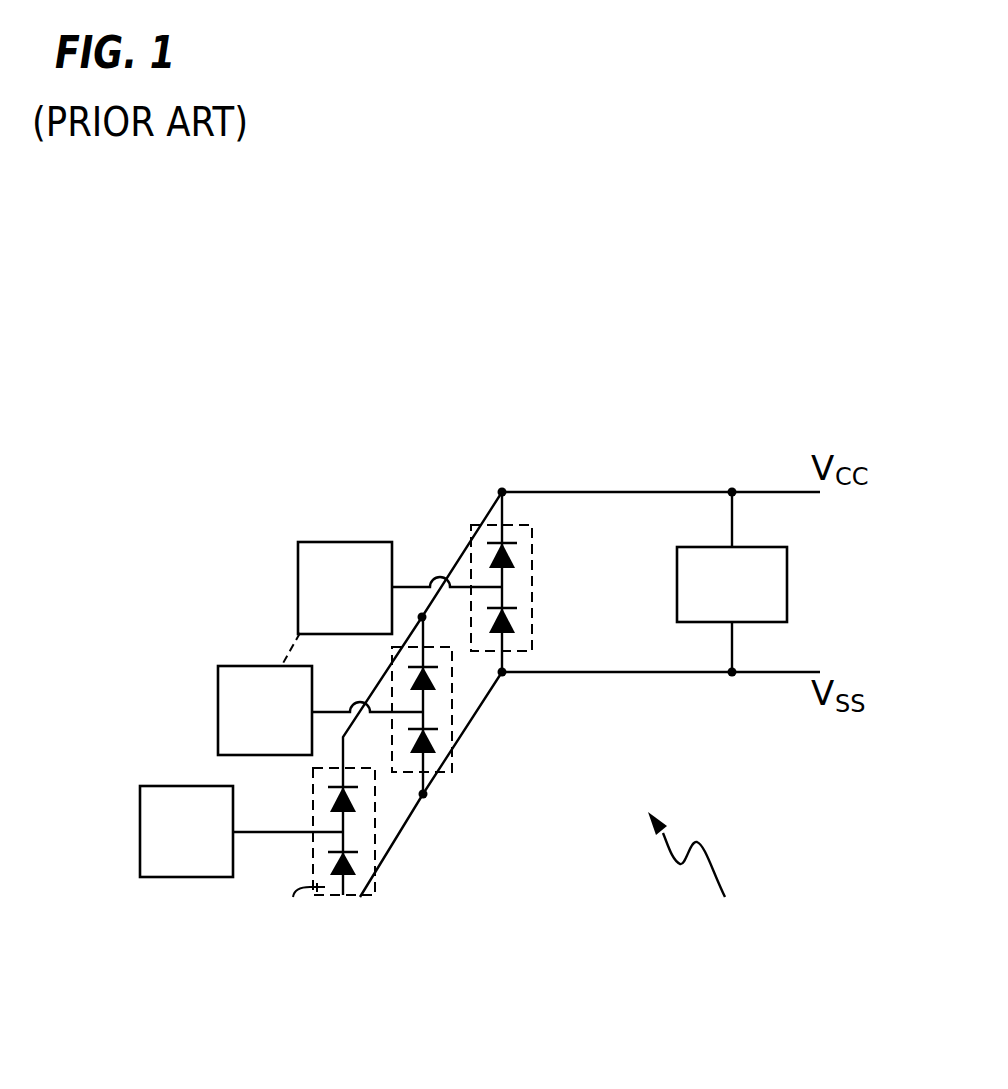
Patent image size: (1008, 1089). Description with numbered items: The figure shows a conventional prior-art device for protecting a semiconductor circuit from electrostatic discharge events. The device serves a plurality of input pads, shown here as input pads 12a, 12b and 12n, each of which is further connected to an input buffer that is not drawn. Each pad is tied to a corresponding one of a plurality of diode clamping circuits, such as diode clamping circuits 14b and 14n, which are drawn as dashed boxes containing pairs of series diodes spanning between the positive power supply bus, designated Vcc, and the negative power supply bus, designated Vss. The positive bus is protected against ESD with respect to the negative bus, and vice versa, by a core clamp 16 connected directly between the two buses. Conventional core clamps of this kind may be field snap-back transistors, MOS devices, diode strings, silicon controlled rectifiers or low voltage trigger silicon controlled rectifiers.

The input pad 12n is at (298, 586).
The input pad 12b is at (218, 714).
The input pad 12a is at (140, 831).
The diode clamping circuit 14n is at (523, 580).
The diode clamping circuit 14b is at (445, 718).
The core clamp 16 is at (787, 585).